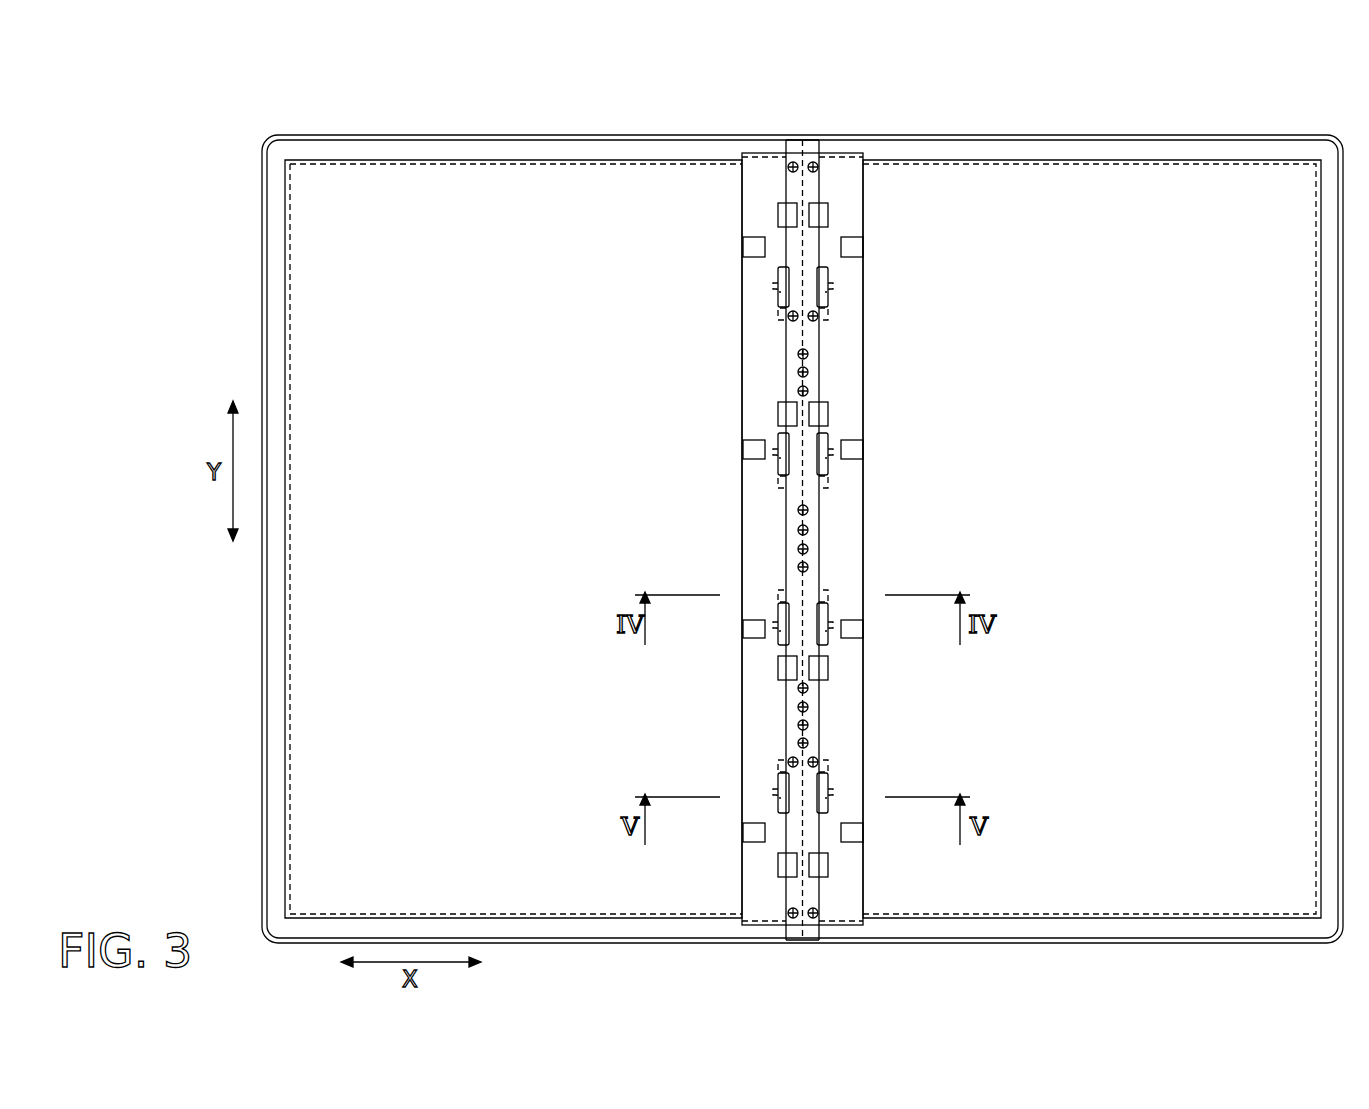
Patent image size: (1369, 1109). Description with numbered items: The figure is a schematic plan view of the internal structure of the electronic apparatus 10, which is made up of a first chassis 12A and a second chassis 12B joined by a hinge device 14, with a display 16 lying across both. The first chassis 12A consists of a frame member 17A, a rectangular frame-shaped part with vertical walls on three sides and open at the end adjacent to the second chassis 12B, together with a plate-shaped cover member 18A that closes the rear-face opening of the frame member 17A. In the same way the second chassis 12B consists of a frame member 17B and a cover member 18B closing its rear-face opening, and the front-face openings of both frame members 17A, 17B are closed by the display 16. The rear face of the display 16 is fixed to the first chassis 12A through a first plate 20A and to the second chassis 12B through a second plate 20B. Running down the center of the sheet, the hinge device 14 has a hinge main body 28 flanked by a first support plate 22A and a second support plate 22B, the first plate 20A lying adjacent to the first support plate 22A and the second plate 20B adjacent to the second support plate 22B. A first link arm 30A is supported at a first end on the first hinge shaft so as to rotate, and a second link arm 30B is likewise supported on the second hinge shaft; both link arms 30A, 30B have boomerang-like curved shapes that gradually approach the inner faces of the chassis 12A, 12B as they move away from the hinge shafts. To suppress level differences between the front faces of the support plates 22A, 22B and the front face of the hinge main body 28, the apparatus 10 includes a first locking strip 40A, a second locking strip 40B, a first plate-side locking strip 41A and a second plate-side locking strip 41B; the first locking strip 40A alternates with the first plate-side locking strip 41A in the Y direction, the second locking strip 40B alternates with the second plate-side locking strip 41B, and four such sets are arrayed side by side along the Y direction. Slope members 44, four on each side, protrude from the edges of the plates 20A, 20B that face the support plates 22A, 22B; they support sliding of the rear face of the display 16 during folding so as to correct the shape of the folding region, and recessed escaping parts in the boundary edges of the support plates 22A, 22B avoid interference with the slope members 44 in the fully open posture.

The electronic apparatus 10 is at (236, 114).
The first chassis 12A is at (427, 128).
The second chassis 12B is at (1160, 128).
The hinge device 14 is at (846, 376).
The display 16 is at (1248, 152).
The frame member 17A is at (536, 136).
The frame member 17B is at (1058, 136).
The cover member 18A is at (601, 186).
The cover member 18B is at (1002, 186).
The first plate 20A is at (552, 895).
The second plate 20B is at (1052, 895).
The first support plate 22A is at (752, 700).
The second support plate 22B is at (854, 700).
The hinge main body 28 is at (798, 355).
The first link arm 30A is at (781, 275).
The second link arm 30B is at (825, 275).
The first locking strip 40A is at (778, 316).
The second locking strip 40B is at (828, 316).
The first plate-side locking strip 41A is at (774, 288).
The second plate-side locking strip 41B is at (832, 288).
The slope member 44 is at (750, 247).